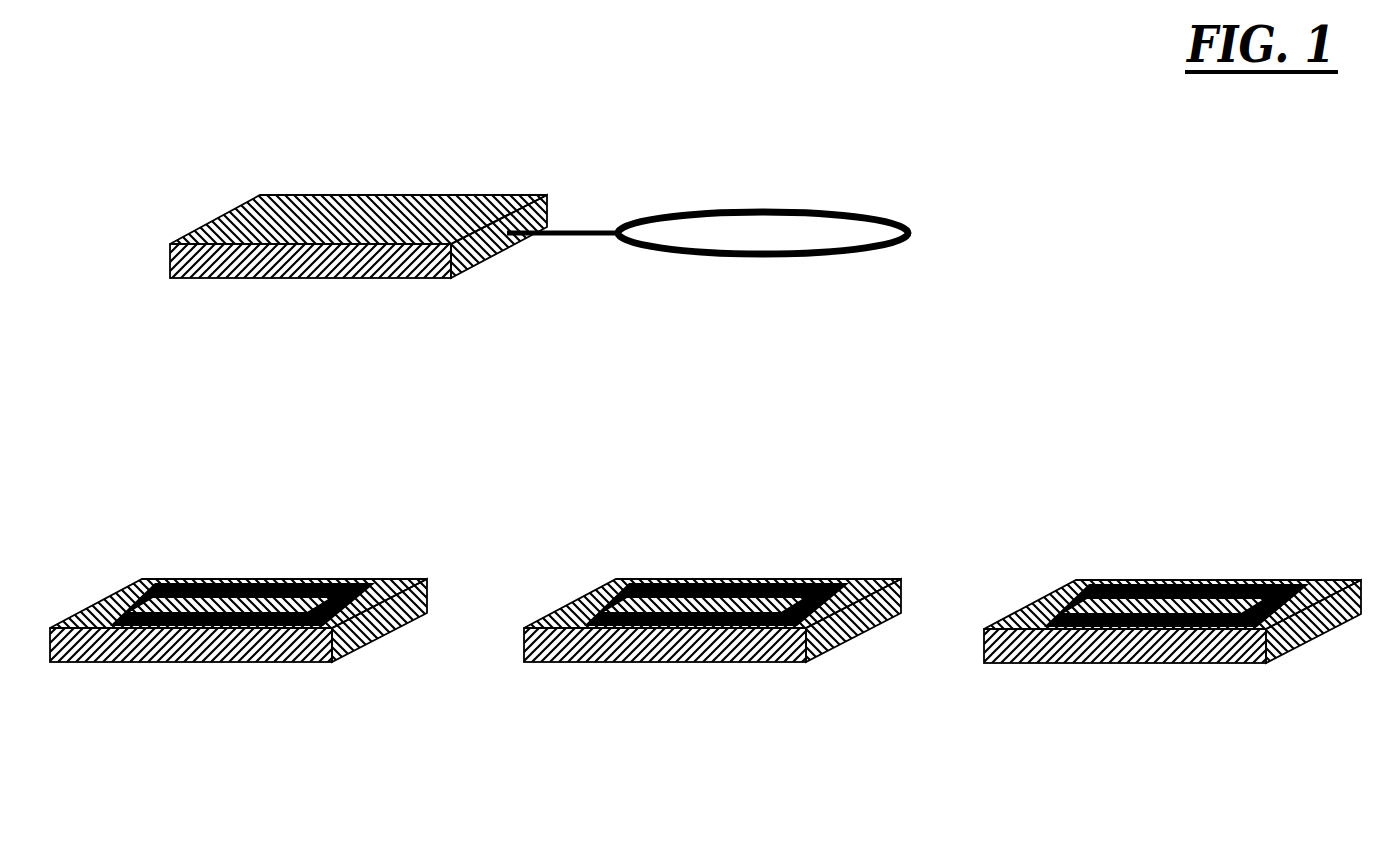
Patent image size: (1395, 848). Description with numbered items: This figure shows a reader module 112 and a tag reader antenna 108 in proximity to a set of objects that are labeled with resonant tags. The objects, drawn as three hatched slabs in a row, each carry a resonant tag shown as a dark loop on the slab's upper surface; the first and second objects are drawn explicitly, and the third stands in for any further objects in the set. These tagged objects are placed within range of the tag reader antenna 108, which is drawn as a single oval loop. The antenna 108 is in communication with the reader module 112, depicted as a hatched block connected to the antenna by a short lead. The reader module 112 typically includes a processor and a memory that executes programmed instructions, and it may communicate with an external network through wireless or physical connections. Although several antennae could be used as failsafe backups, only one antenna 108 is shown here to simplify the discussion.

The tag reader antenna 108 is at (721, 208).
The reader module 112 is at (344, 228).